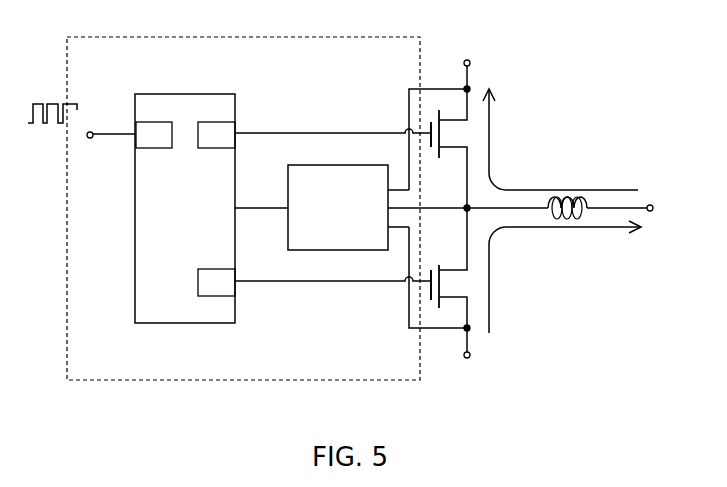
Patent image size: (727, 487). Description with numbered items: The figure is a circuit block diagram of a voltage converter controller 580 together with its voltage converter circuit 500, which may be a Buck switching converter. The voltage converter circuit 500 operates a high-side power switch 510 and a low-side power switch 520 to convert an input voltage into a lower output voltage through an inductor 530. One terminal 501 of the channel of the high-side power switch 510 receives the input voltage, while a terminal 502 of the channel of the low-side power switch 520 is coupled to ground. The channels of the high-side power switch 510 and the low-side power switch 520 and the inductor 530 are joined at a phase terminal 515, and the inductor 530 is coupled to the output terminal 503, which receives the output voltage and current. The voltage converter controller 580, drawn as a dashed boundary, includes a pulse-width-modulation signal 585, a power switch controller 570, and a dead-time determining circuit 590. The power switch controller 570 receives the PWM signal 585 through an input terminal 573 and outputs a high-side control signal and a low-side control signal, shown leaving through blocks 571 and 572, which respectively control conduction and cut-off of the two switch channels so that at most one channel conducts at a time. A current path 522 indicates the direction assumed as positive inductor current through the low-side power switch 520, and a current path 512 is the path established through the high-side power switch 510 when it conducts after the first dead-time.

The voltage converter circuit 500 is at (639, 53).
The voltage converter controller 580 is at (344, 68).
The power switch controller 570 is at (173, 238).
The first driver output 571 is at (216, 135).
The second driver output 572 is at (216, 282).
The input terminal 573 is at (154, 135).
The pulse-width-modulation (PWM) signal 585 is at (90, 138).
The dead-time determining circuit 590 is at (327, 239).
The high-side power switch 510 is at (446, 156).
The low-side power switch 520 is at (442, 263).
The phase terminal 515 is at (464, 210).
The terminal 501 is at (471, 63).
The terminal 502 is at (471, 355).
The output terminal 503 is at (650, 204).
The current path 512 is at (605, 189).
The current path 522 is at (614, 229).
The inductor 530 is at (575, 222).